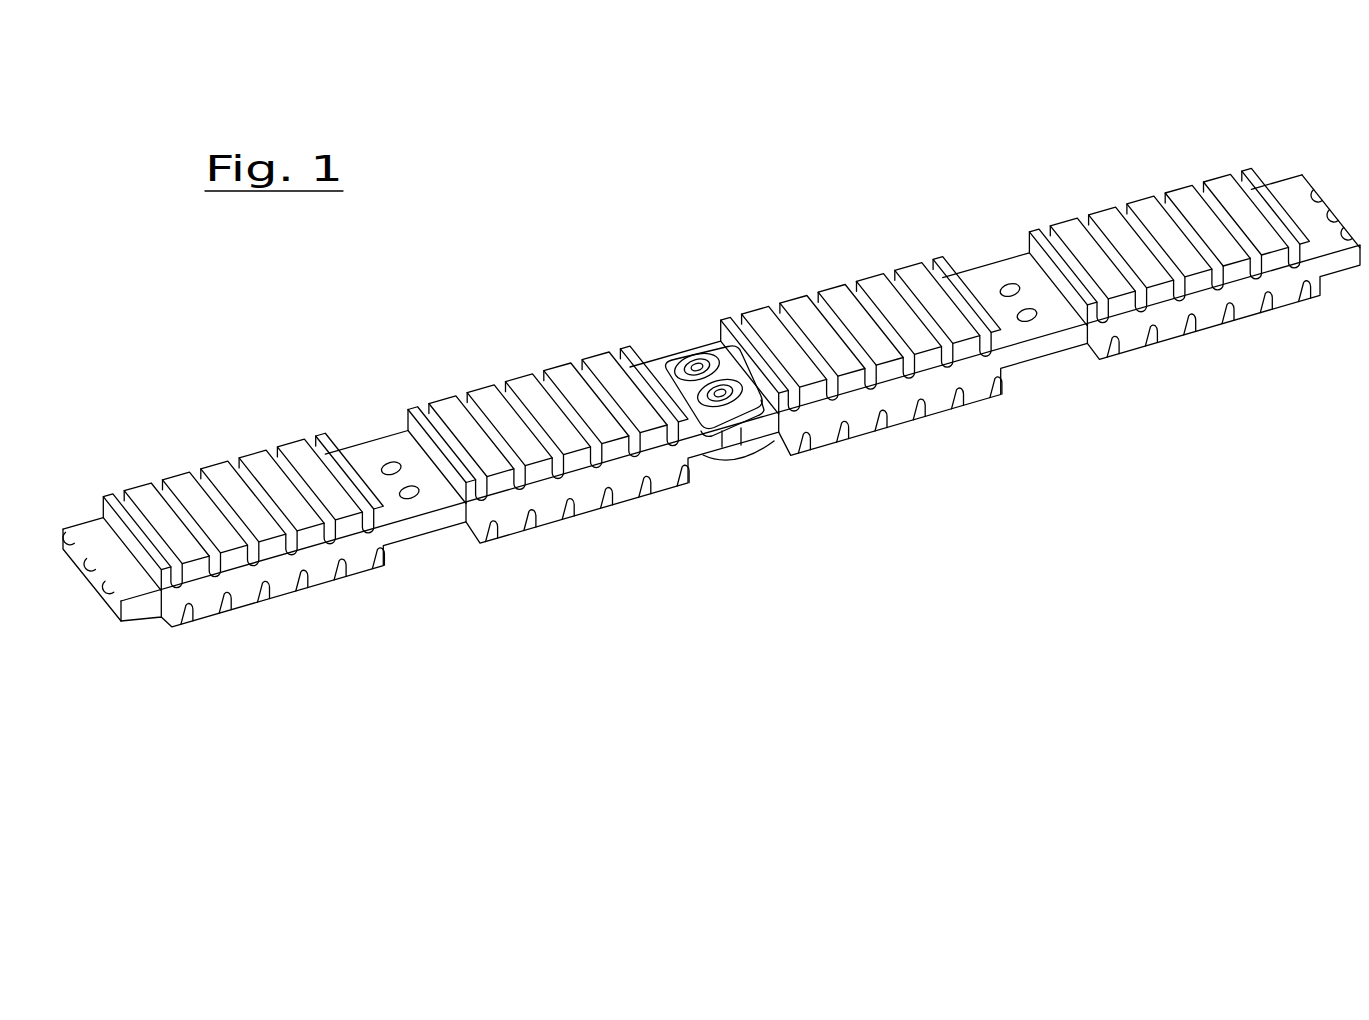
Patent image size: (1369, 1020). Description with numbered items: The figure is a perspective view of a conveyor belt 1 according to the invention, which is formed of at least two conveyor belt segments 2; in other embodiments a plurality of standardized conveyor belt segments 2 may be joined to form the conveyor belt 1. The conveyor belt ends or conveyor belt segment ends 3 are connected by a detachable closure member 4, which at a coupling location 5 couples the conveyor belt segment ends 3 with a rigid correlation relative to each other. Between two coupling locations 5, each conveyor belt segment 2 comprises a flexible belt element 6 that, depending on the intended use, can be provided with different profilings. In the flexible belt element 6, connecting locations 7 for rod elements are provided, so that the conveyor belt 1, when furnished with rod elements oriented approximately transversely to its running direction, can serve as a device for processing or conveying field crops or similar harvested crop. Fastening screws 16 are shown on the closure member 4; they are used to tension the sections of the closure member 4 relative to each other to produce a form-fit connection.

The conveyor belt 1 is at (746, 666).
The conveyor belt segment 2 is at (500, 328).
The conveyor belt segment end 3 is at (90, 642).
The closure member 4 is at (664, 336).
The coupling location 5 is at (68, 418).
The flexible belt element 6 is at (866, 438).
The connecting location 7 is at (452, 578).
The fastening screw 16 is at (697, 368).